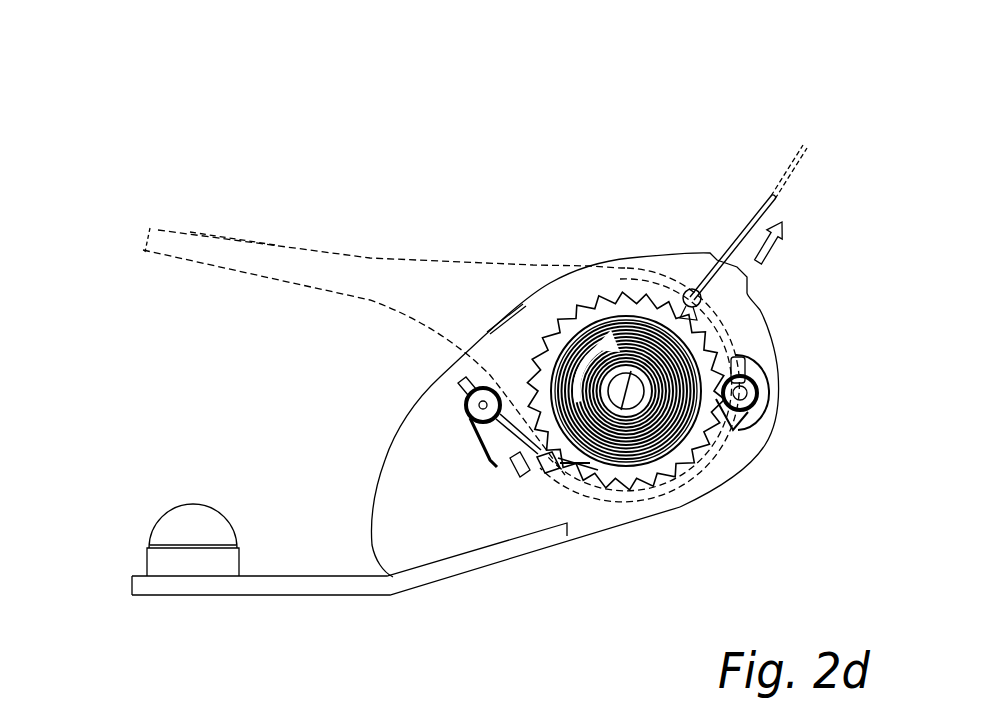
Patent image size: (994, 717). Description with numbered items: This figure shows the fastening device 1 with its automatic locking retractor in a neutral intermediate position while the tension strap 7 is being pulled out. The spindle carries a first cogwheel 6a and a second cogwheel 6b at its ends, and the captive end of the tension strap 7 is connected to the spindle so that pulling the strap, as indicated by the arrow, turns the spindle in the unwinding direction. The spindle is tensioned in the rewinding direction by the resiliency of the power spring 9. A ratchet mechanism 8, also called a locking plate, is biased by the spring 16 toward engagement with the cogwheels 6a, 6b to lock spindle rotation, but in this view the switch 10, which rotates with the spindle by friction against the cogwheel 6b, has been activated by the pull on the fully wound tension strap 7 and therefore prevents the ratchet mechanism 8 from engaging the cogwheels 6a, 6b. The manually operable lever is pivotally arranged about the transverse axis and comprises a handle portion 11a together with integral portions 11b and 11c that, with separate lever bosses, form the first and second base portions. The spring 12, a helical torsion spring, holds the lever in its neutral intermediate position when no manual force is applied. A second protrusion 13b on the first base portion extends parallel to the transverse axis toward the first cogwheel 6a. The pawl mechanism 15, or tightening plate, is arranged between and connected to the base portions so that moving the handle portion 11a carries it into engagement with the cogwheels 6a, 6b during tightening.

The fastening device 1 is at (850, 151).
The first cogwheel 6a is at (601, 331).
The second cogwheel 6b is at (553, 340).
The tension strap 7 is at (752, 220).
The ratchet mechanism 8 is at (488, 442).
The power spring 9 is at (653, 447).
The switch 10 is at (577, 452).
The handle portion 11a is at (147, 245).
The portion of first base portion 11b is at (805, 313).
The portion of second base portion 11c is at (735, 322).
The spring 12 is at (760, 383).
The second protrusion 13b is at (548, 462).
The pawl mechanism 15 is at (760, 405).
The spring 16 is at (468, 430).